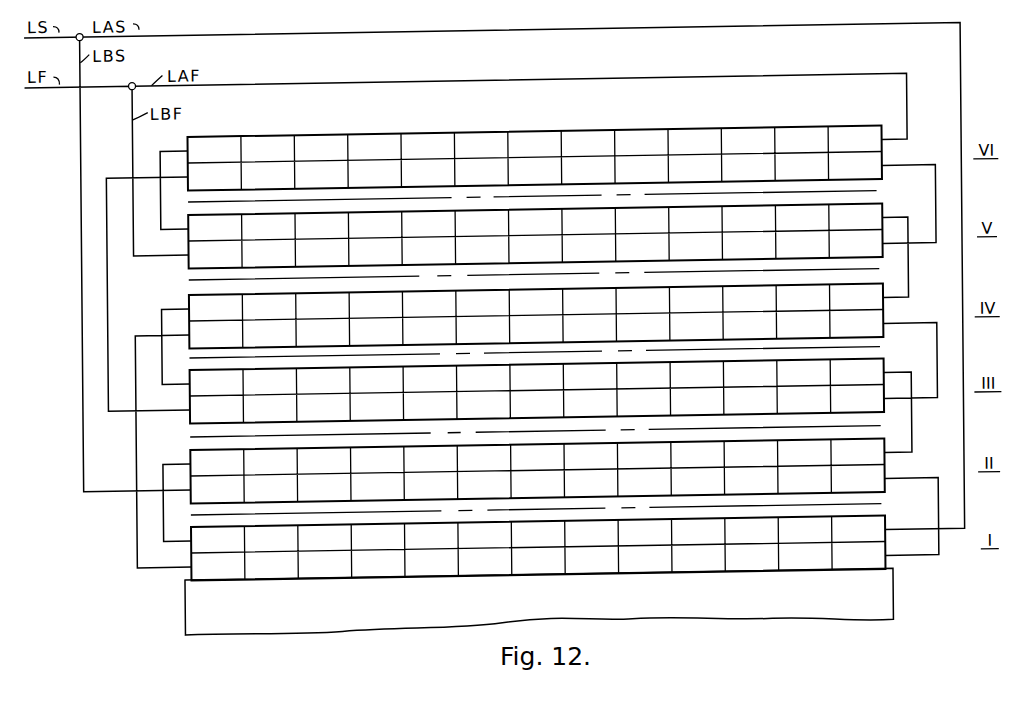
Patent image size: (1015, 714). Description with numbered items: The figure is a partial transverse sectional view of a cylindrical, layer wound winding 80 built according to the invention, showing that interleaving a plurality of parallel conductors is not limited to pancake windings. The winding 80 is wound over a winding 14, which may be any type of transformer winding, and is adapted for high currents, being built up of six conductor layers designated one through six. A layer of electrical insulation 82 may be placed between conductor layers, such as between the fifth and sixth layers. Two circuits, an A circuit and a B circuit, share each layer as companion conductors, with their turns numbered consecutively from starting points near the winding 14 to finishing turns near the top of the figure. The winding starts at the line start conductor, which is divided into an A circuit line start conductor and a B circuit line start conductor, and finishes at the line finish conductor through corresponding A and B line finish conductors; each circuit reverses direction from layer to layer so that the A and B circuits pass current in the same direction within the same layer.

The layer wound winding 80 is at (543, 119).
The electrical insulation 82 is at (878, 203).
The winding 14 is at (186, 592).